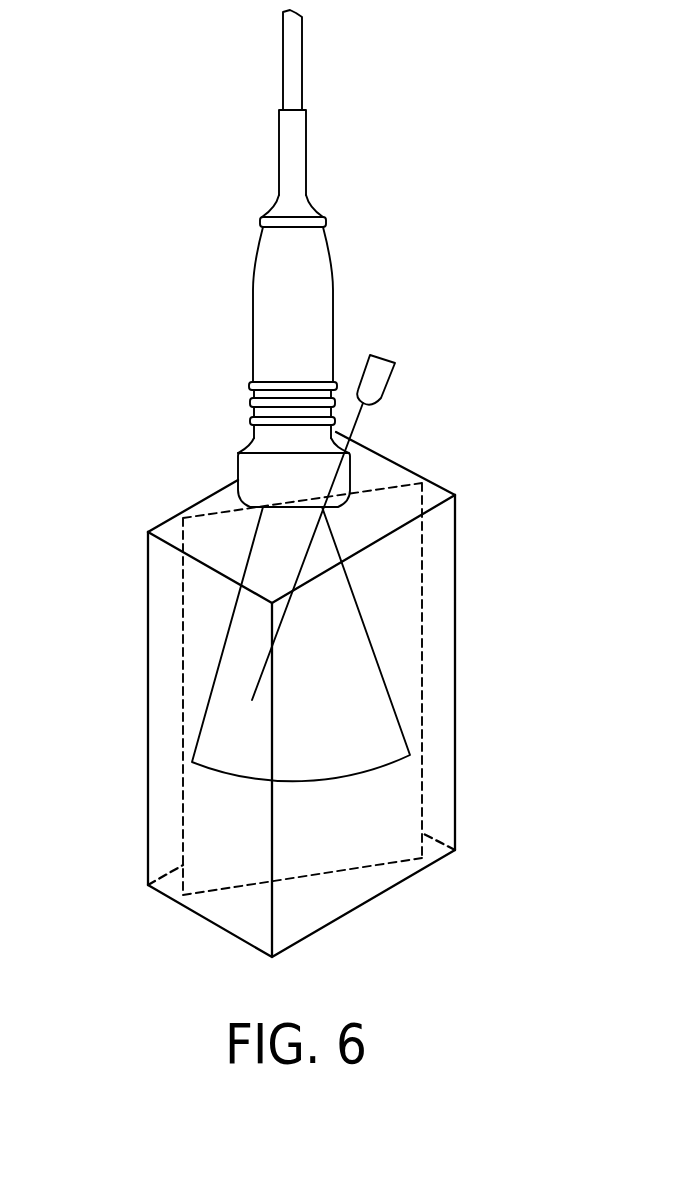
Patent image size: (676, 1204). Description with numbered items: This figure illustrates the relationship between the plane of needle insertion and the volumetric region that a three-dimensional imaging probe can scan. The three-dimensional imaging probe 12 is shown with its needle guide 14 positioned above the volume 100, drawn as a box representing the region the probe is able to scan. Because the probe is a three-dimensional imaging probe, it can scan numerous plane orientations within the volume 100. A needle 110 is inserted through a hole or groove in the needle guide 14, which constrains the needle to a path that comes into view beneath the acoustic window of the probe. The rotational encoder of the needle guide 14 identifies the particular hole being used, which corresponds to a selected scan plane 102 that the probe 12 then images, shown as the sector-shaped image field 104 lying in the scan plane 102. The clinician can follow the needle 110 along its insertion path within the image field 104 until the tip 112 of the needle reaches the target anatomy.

The 3D imaging probe 12 is at (251, 305).
The needle guide 14 is at (237, 466).
The needle 110 is at (364, 419).
The tip of the needle 112 is at (262, 672).
The volume 100 is at (456, 561).
The scan plane 102 is at (422, 638).
The image field 104 is at (398, 719).